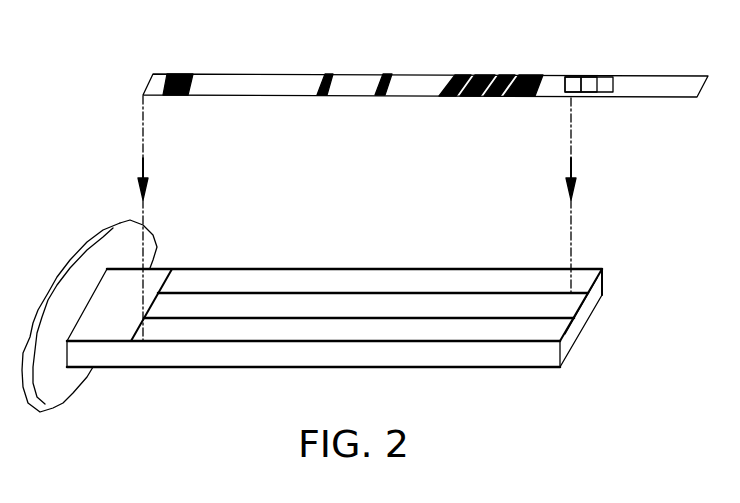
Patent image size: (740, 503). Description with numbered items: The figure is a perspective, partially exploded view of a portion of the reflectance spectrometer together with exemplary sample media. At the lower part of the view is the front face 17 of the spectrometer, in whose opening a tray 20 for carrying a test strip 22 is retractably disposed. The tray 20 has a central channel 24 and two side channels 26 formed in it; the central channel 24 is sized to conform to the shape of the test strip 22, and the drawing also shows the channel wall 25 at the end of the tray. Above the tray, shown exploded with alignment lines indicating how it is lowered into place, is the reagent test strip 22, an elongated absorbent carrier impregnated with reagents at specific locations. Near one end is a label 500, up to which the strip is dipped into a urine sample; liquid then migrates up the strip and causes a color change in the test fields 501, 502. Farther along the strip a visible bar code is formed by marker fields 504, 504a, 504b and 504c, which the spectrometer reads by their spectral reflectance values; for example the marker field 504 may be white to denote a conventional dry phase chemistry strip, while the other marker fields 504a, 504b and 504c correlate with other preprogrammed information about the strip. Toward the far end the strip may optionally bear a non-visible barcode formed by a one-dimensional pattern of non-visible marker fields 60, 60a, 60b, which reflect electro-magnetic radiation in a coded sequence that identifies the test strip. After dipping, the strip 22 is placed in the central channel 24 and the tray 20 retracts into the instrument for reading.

The front face 17 is at (65, 393).
The tray 20 is at (384, 310).
The test strip 22 is at (653, 89).
The central channel 24 is at (550, 308).
The channel wall 25 is at (597, 297).
The side channels 26 is at (465, 268).
The non-visible marker field 60 is at (590, 92).
The non-visible marker field 60a is at (590, 77).
The non-visible marker field 60b is at (578, 77).
The label 500 is at (180, 96).
The test field 501 is at (325, 96).
The test field 502 is at (382, 96).
The marker field 504 is at (522, 96).
The marker field 504a is at (497, 96).
The marker field 504b is at (478, 96).
The marker field 504c is at (452, 96).